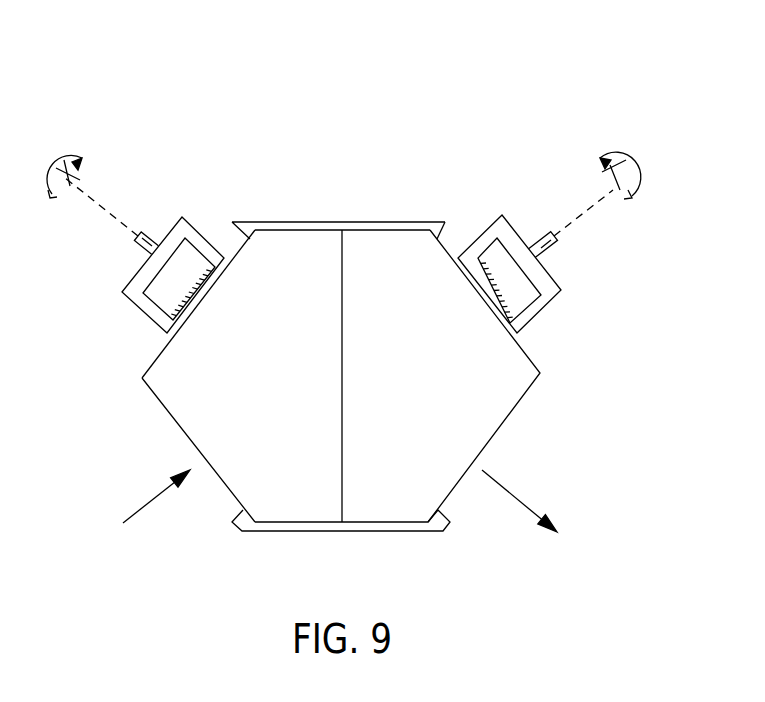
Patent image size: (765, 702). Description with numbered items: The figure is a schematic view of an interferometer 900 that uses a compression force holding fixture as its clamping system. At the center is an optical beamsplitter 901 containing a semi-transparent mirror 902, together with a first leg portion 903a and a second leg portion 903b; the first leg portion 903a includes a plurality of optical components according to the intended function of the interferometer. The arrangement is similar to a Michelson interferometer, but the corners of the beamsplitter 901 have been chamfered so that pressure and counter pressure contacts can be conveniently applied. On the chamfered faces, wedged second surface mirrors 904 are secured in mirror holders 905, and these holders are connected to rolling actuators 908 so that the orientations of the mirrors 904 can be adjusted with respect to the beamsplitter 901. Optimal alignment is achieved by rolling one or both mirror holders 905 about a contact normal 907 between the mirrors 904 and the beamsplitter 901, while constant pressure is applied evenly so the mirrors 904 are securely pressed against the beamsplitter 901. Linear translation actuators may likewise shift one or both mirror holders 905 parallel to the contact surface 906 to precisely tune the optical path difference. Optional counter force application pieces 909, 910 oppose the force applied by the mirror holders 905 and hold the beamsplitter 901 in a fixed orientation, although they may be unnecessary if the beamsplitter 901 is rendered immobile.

The interferometer 900 is at (538, 113).
The optical beamsplitter 901 is at (300, 245).
The semi-transparent mirror 902 is at (345, 265).
The first leg portion 903a is at (188, 208).
The second leg portion 903b is at (550, 317).
The wedged second surface mirror 904 is at (213, 270).
The mirror holder 905 is at (135, 317).
The contact surface 906 is at (158, 365).
The contact normal 907 is at (98, 203).
The rolling actuator 908 is at (120, 225).
The counter force application piece 909 is at (445, 218).
The counter force application piece 910 is at (242, 531).